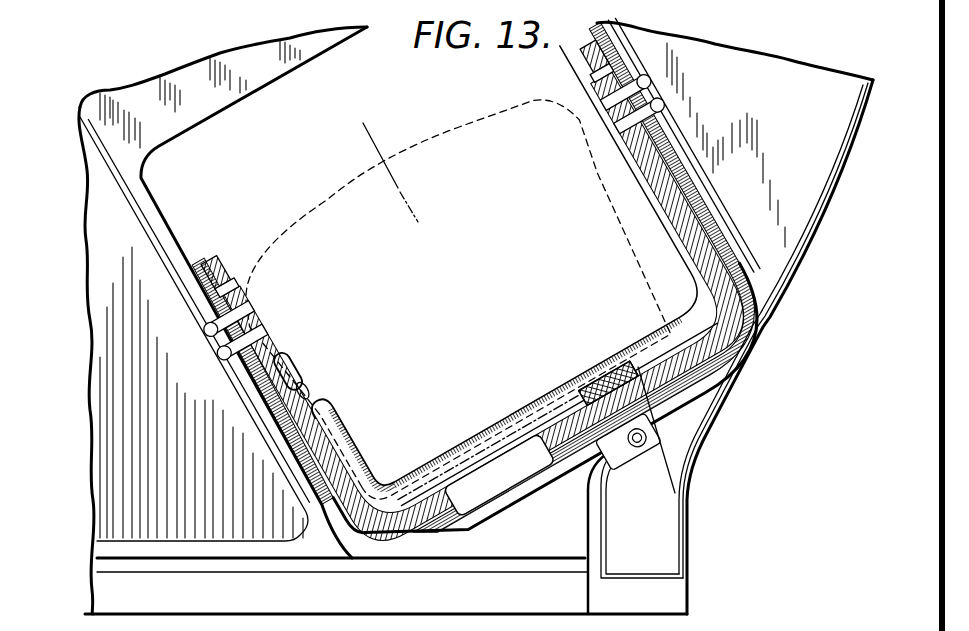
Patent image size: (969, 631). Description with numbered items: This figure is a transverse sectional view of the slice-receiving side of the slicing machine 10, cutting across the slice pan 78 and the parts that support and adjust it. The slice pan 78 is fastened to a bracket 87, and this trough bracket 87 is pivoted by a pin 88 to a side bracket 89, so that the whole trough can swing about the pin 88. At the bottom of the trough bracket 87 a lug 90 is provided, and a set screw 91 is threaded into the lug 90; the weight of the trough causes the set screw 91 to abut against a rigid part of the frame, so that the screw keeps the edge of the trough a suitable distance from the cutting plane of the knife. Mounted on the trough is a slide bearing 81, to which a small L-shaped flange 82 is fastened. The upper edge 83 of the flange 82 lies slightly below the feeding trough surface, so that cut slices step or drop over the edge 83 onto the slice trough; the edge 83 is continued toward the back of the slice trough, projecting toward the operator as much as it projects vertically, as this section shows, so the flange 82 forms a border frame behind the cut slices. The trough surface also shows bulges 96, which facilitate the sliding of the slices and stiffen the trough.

The slicing machine section 10 is at (353, 150).
The slice pan 78 is at (280, 377).
The slide bearing 81 is at (620, 377).
The flange 82 is at (343, 433).
The upper edge 83 is at (463, 443).
The bracket 87 is at (236, 303).
The pin 88 is at (226, 291).
The side bracket 89 is at (188, 267).
The lug 90 is at (580, 467).
The set screw 91 is at (653, 441).
The bulges 96 is at (300, 390).